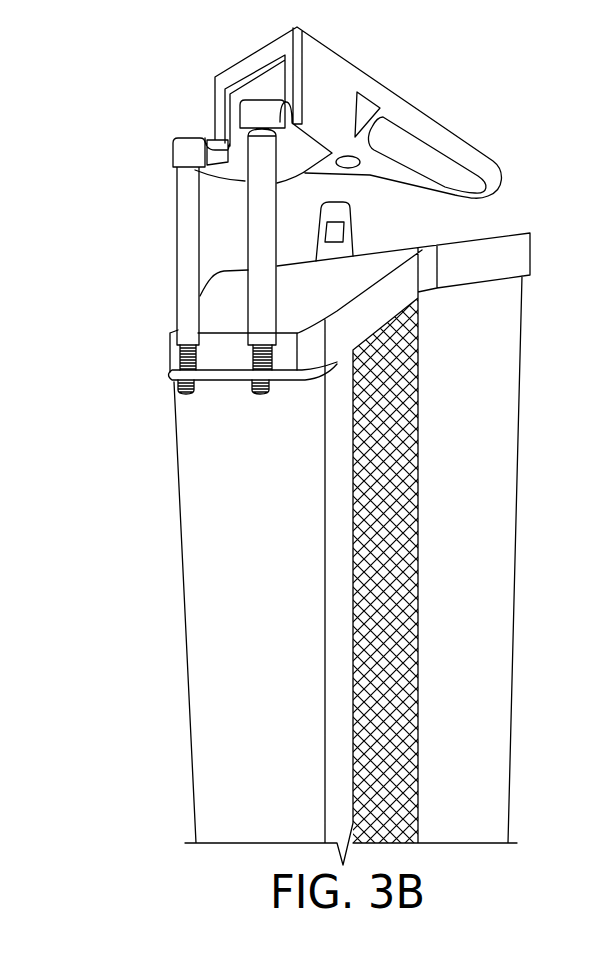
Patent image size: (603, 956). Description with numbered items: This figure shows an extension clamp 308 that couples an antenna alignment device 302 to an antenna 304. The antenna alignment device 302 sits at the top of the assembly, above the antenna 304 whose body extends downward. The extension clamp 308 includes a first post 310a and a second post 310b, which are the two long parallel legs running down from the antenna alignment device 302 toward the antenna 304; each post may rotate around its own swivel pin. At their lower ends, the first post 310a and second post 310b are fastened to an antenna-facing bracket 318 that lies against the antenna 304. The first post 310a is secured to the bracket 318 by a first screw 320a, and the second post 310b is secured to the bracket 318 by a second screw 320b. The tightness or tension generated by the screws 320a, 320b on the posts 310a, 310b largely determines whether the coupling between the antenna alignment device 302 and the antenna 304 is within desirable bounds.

The antenna alignment device 302 is at (447, 138).
The antenna 304 is at (493, 826).
The extension clamp 308 is at (160, 140).
The first post 310a is at (257, 290).
The second post 310b is at (188, 212).
The bracket 318 is at (230, 383).
The first screw 320a is at (263, 387).
The second screw 320b is at (173, 387).